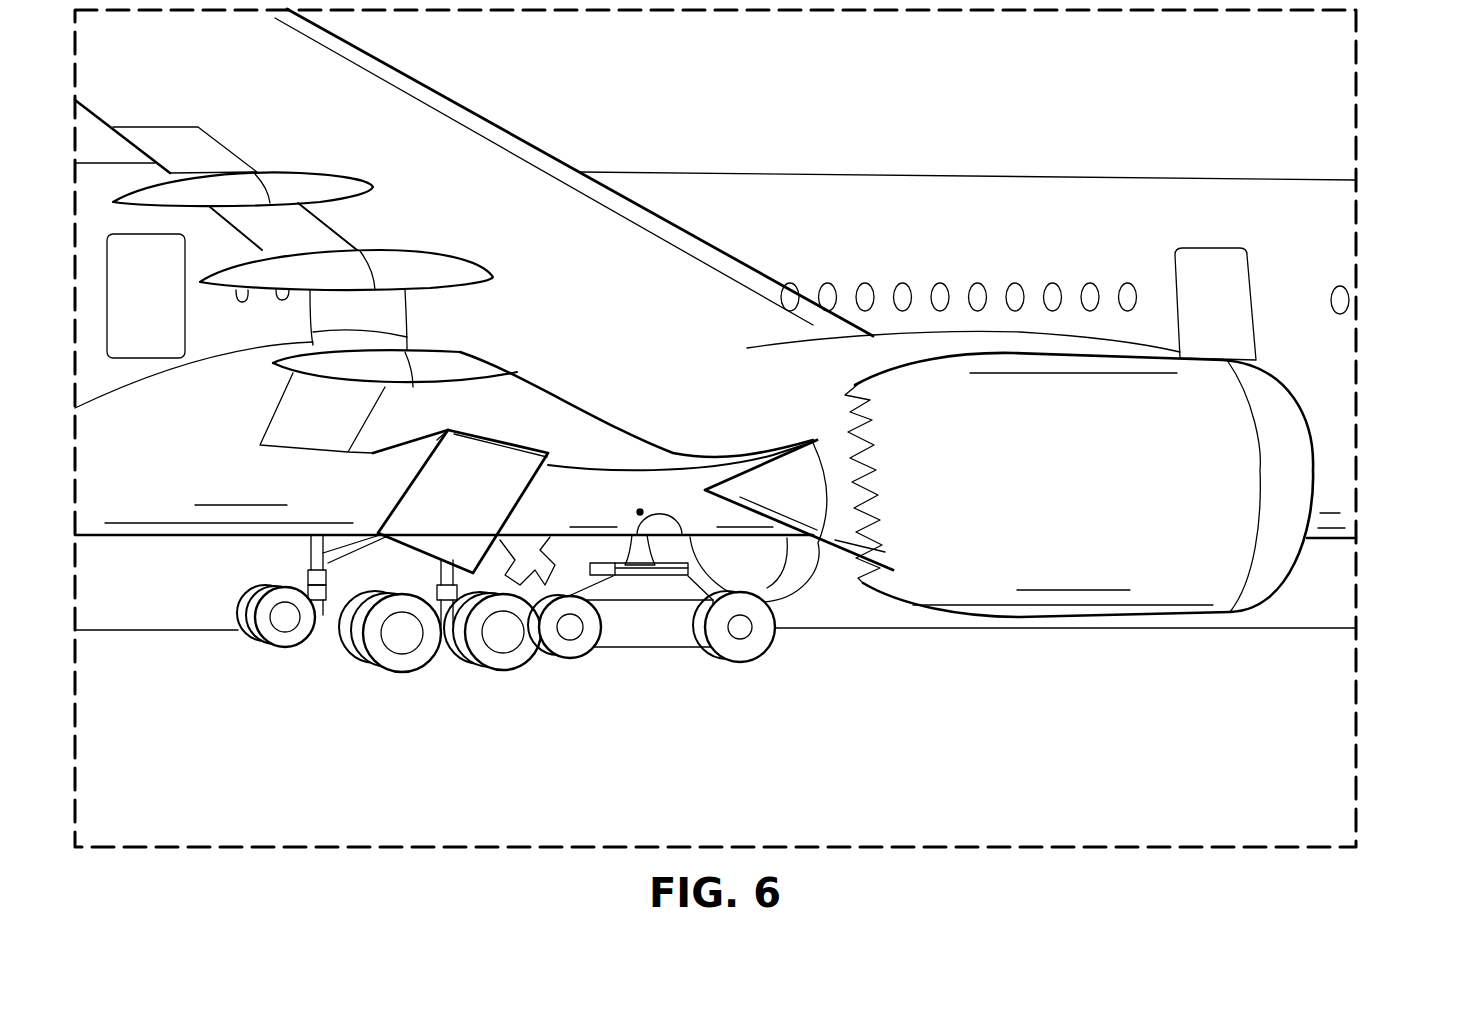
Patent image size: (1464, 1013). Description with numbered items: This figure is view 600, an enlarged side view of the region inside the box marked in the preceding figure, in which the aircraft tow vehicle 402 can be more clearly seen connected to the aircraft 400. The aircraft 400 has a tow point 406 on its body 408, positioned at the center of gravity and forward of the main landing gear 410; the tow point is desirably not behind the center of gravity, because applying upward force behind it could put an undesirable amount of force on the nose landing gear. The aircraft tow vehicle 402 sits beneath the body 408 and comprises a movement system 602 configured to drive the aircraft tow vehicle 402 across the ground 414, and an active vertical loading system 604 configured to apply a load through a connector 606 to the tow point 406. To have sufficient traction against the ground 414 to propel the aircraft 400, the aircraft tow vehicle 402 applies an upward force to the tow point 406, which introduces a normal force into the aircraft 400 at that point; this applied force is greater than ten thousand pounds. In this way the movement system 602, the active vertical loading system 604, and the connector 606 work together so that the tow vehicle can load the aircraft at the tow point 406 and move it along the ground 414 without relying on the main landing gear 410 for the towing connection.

The view 600 is at (1366, 70).
The aircraft 400 is at (1102, 166).
The body 408 is at (858, 172).
The tow point 406 is at (682, 537).
The connector 606 is at (616, 550).
The ground 414 is at (157, 656).
The main landing gear 410 is at (326, 666).
The aircraft tow vehicle 402 is at (607, 670).
The active vertical loading system 604 is at (673, 616).
The movement system 602 is at (788, 649).